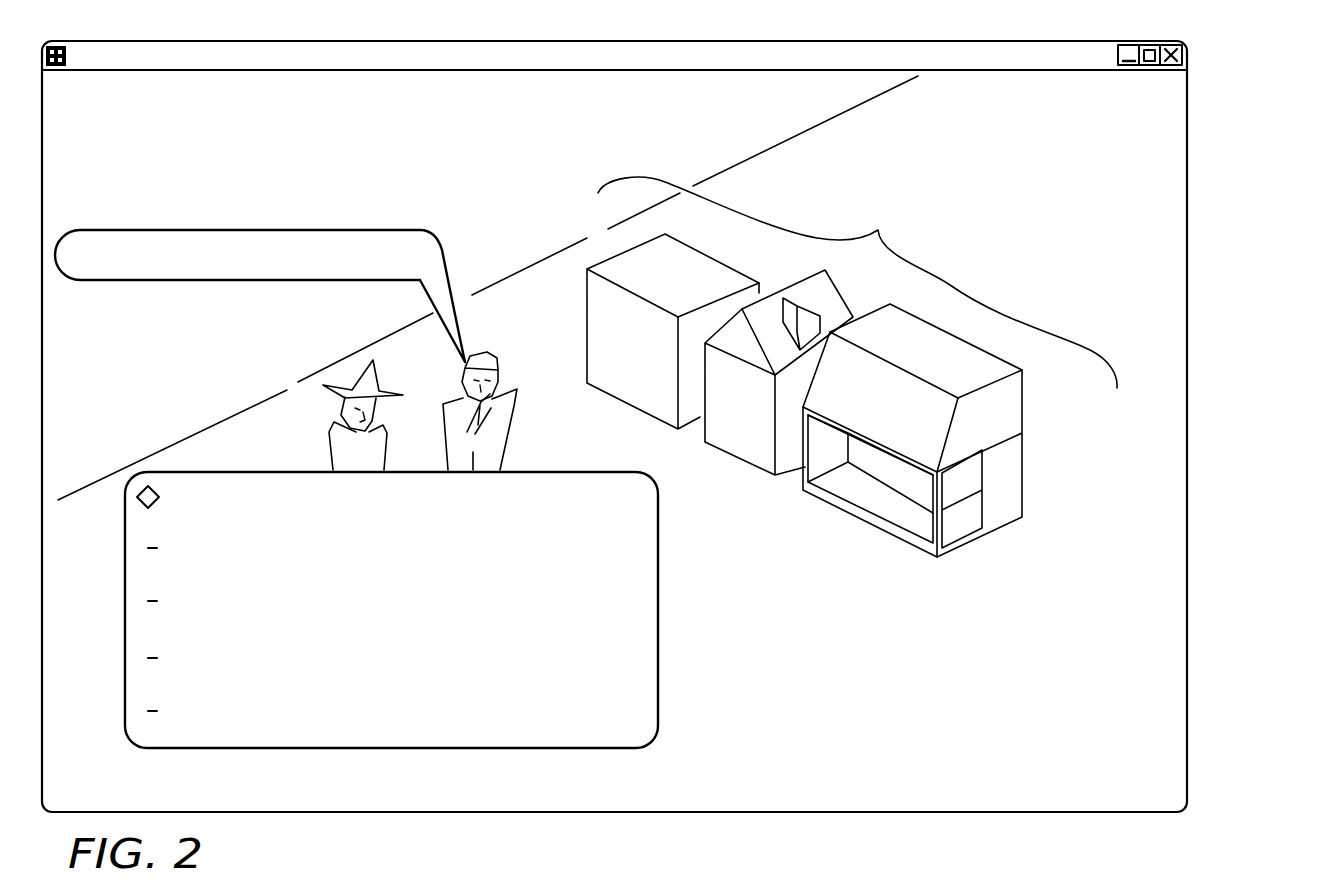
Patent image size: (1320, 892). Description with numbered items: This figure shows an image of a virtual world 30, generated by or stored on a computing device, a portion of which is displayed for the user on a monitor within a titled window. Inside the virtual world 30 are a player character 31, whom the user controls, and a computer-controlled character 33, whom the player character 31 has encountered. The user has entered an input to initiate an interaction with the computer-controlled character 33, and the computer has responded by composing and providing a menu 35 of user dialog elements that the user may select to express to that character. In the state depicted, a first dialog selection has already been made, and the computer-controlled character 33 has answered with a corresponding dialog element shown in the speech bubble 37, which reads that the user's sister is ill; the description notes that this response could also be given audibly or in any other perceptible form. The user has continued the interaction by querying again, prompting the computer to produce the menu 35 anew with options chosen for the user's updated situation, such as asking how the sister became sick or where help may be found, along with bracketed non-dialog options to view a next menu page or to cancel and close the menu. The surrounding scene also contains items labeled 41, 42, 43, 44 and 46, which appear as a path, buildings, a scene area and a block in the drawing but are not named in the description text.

The virtual world 30 is at (1207, 93).
The player character 31 is at (323, 427).
The computer-controlled character 33 is at (513, 418).
The menu 35 is at (658, 635).
The speech bubble 37 is at (224, 230).
The path 41 is at (857, 282).
The building 42 is at (1023, 453).
The virtual world scene 43 is at (567, 364).
The house 44 is at (757, 473).
The cube object 46 is at (623, 253).